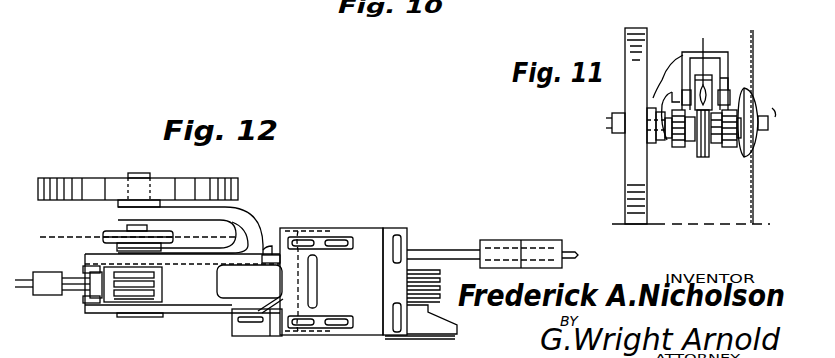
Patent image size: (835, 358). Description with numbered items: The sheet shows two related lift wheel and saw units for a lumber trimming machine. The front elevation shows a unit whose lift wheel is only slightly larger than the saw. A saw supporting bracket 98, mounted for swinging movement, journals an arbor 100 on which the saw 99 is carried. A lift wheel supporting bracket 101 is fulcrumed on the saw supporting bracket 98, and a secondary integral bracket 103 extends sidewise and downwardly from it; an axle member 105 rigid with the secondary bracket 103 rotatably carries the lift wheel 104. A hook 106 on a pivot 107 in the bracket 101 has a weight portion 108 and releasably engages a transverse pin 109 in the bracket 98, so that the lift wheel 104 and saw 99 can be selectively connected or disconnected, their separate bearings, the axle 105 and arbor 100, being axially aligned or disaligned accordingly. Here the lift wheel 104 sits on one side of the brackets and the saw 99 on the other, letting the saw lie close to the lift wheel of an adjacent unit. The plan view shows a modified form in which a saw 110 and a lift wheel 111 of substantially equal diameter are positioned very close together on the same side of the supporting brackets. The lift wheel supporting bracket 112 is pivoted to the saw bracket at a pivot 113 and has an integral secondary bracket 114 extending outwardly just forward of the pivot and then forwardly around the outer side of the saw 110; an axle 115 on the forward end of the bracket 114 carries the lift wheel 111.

In FIG. 11, the saw supporting bracket 98 is at (678, 150).
In FIG. 11, the saw 99 is at (753, 190).
In FIG. 11, the arbor 100 is at (762, 122).
In FIG. 11, the lift wheel supporting bracket 101 is at (730, 70).
In FIG. 11, the secondary integral bracket 103 is at (660, 97).
In FIG. 11, the lift wheel 104 is at (627, 50).
In FIG. 11, the axle member 105 is at (612, 124).
In FIG. 11, the hook 106 is at (700, 160).
In FIG. 11, the pivot 107 is at (732, 90).
In FIG. 11, the weight portion 108 is at (708, 75).
In FIG. 11, the transverse pin 109 is at (716, 150).
In FIG. 12, the saw 110 is at (70, 236).
In FIG. 12, the lift wheel 111 is at (68, 180).
In FIG. 12, the lift wheel supporting bracket 112 is at (200, 297).
In FIG. 12, the pivot 113 is at (268, 247).
In FIG. 12, the secondary bracket 114 is at (247, 222).
In FIG. 12, the axle 115 is at (131, 172).